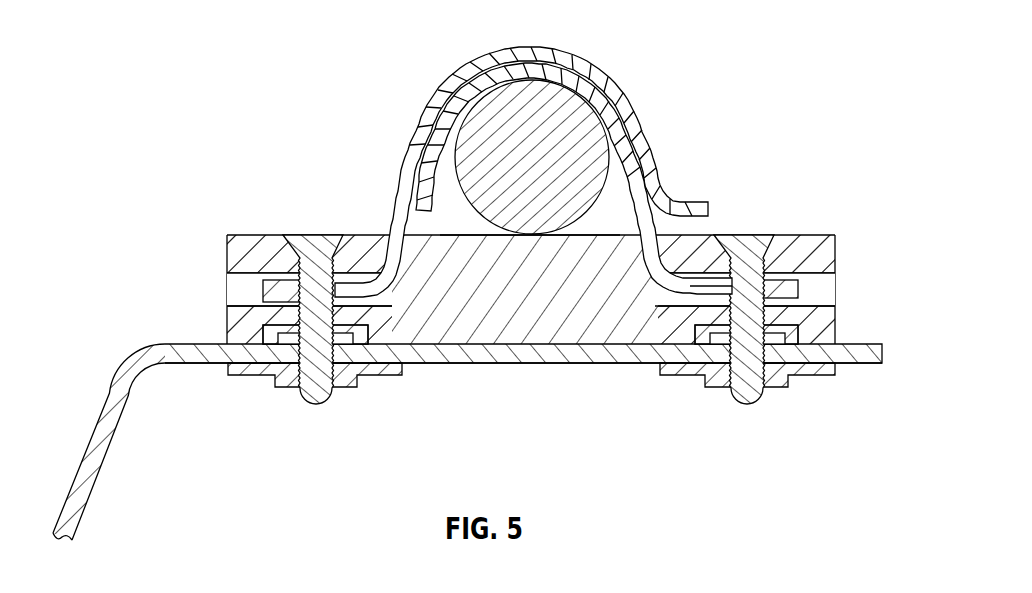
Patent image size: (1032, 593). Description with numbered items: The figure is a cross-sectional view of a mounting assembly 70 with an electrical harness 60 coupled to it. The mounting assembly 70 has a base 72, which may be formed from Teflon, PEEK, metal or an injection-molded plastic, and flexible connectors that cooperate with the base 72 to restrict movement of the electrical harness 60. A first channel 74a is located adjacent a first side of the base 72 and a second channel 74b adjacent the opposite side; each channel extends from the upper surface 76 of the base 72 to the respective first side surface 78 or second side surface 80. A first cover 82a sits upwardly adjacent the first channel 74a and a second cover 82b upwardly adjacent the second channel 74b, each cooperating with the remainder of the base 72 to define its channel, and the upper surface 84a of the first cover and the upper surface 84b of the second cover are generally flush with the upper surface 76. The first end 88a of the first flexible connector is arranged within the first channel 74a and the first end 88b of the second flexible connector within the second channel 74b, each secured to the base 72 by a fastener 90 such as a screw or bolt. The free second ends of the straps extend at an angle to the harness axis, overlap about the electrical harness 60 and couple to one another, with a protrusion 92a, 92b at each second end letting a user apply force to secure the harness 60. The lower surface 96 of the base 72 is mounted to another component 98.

The electrical harness 60 is at (527, 100).
The mounting assembly 70 is at (217, 40).
The base 72 is at (582, 325).
The first channel 74a is at (823, 284).
The second channel 74b is at (233, 286).
The upper surface 76 is at (465, 233).
The first side surface 78 is at (823, 313).
The second side surface 80 is at (240, 313).
The first cover 82a is at (826, 248).
The second cover 82b is at (230, 248).
The upper surface of first cover 84a is at (805, 234).
The upper surface of second cover 84b is at (255, 234).
The first end of first flexible connector 88a is at (787, 290).
The first end of second flexible connector 88b is at (270, 288).
The fastener 90 is at (322, 398).
The protrusion 92a is at (430, 175).
The protrusion 92b is at (700, 208).
The lower surface 96 is at (512, 350).
The another component 98 is at (442, 366).